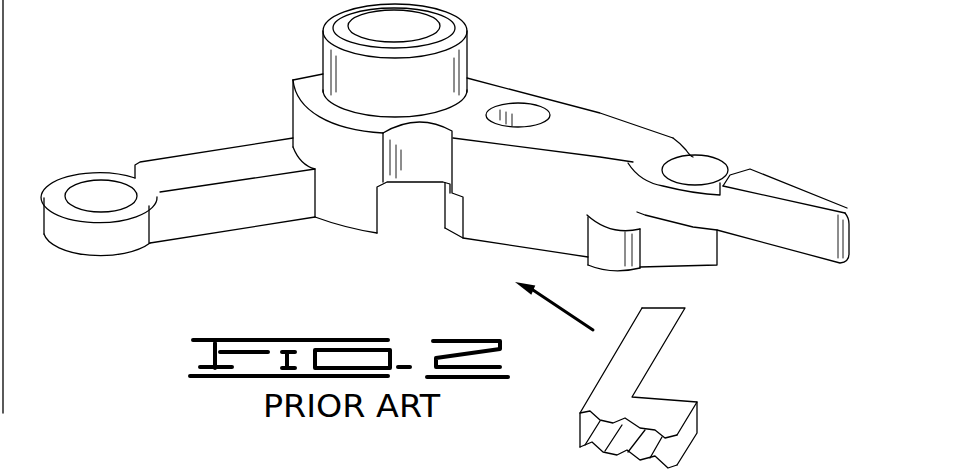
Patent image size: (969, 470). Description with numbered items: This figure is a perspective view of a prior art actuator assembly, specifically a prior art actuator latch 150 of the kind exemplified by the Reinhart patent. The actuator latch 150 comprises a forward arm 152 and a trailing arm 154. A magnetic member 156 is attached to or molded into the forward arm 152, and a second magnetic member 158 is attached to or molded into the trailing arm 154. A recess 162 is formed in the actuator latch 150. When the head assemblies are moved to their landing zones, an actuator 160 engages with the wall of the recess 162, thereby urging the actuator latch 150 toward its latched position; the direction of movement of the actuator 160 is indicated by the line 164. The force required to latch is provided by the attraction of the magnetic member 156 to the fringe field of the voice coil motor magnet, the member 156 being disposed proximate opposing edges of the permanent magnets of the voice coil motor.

The actuator latch 150 is at (229, 86).
The forward arm 152 is at (120, 242).
The trailing arm 154 is at (772, 217).
The magnetic member 156 is at (90, 193).
The magnetic member 158 is at (698, 165).
The actuator 160 is at (640, 367).
The recess 162 is at (423, 157).
The line 164 is at (565, 311).